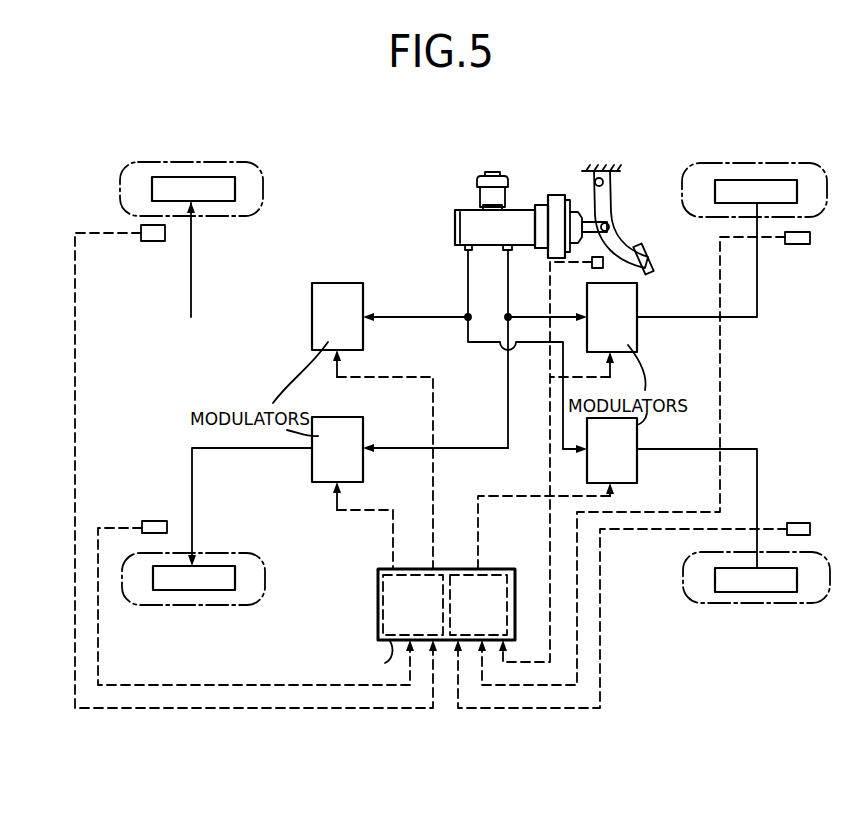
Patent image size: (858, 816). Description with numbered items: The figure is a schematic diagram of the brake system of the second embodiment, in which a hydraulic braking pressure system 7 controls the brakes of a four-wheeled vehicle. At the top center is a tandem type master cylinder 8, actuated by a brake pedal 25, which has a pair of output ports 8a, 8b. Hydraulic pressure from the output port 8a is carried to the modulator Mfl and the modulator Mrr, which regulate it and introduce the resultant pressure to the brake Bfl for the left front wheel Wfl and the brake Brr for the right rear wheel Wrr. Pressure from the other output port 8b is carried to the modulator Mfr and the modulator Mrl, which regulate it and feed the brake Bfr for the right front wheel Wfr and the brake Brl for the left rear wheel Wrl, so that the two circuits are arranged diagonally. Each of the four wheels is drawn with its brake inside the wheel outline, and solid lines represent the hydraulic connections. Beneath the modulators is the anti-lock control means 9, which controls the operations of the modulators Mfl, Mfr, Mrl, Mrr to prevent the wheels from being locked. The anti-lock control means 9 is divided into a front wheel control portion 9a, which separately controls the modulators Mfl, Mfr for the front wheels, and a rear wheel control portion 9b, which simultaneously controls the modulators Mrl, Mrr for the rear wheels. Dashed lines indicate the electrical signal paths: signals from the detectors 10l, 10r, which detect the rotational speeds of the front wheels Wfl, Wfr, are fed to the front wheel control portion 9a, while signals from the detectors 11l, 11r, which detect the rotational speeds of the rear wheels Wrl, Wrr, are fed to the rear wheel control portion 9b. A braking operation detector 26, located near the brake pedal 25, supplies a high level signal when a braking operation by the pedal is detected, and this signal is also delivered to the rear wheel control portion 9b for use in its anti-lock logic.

The hydraulic braking pressure system 7 is at (278, 359).
The tandem type master cylinder 8 is at (477, 215).
The output port 8a is at (510, 251).
The output port 8b is at (465, 251).
The anti-lock control means 9 is at (368, 580).
The front wheel control portion 9a is at (393, 620).
The rear wheel control portion 9b is at (503, 575).
The detector 10r is at (152, 243).
The detector 10l is at (153, 520).
The detector 11r is at (795, 244).
The detector 11l is at (797, 523).
The brake pedal 25 is at (646, 257).
The braking operation detector 26 is at (590, 268).
The right front wheel Wfr is at (152, 162).
The left front wheel Wfl is at (150, 605).
The right rear wheel Wrr is at (717, 162).
The left rear wheel Wrl is at (720, 605).
The brake for the right front wheel Bfr is at (215, 177).
The brake for the left front wheel Bfl is at (225, 590).
The brake for the right rear wheel Brr is at (778, 185).
The brake for the left rear wheel Brl is at (776, 592).
The modulator Mfr is at (331, 288).
The modulator Mfl is at (327, 425).
The modulator Mrr is at (628, 302).
The modulator Mrl is at (628, 432).